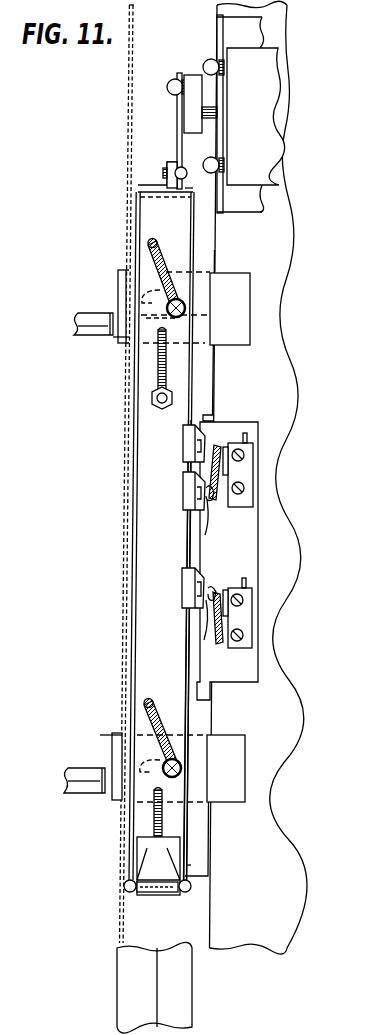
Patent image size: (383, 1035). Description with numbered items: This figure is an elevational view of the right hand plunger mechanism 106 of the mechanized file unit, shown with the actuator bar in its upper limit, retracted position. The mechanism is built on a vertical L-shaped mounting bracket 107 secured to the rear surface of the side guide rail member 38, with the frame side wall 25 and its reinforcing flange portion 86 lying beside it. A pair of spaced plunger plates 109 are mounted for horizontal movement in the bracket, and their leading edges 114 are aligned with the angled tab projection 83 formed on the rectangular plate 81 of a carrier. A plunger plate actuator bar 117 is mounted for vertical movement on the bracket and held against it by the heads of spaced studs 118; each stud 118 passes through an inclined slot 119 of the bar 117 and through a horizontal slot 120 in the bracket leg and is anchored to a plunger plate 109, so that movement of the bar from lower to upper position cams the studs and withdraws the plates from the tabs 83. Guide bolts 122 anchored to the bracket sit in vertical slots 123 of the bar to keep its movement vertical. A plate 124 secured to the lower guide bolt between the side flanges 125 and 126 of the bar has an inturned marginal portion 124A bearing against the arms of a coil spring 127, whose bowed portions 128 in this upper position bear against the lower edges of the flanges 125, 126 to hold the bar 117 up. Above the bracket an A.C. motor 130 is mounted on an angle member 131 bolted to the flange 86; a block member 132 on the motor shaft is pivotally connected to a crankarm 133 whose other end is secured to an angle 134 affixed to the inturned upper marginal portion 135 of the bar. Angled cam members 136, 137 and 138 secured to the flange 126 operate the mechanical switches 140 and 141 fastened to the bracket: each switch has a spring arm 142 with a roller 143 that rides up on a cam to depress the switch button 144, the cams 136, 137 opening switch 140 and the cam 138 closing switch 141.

The side wall member 25 is at (285, 22).
The side guide rail member 38 is at (182, 1003).
The rectangular plate 81 is at (88, 313).
The angled tab projection 83 is at (100, 328).
The reinforcing flange portion 86 is at (273, 317).
The plunger mechanism 106 is at (268, 403).
The mounting bracket 107 is at (208, 382).
The plunger plate 109 is at (238, 278).
The leading edge 114 is at (118, 338).
The plunger plate actuator bar 117 is at (192, 556).
The stud 118 is at (190, 318).
The inclined slot 119 is at (158, 262).
The horizontal slot 120 is at (118, 282).
The guide bolt 122 is at (162, 409).
The vertical slot 123 is at (158, 372).
The plate 124 is at (178, 842).
The inturned marginal portion 124A is at (158, 894).
The side flange 125 is at (138, 531).
The side flange 126 is at (187, 549).
The coil spring 127 is at (185, 866).
The bowed portion 128 is at (125, 889).
The A.C. motor 130 is at (268, 99).
The angle member 131 is at (262, 202).
The block member 132 is at (193, 75).
The crankarm 133 is at (177, 100).
The angle 134 is at (152, 180).
The inturned upper marginal portion 135 is at (186, 190).
The angled cam member 136 is at (185, 455).
The angled cam member 137 is at (185, 492).
The angled cam member 138 is at (184, 596).
The mechanical switch 140 is at (248, 470).
The mechanical switch 141 is at (246, 625).
The spring arm 142 is at (220, 440).
The roller 143 is at (212, 504).
The switch button 144 is at (238, 462).